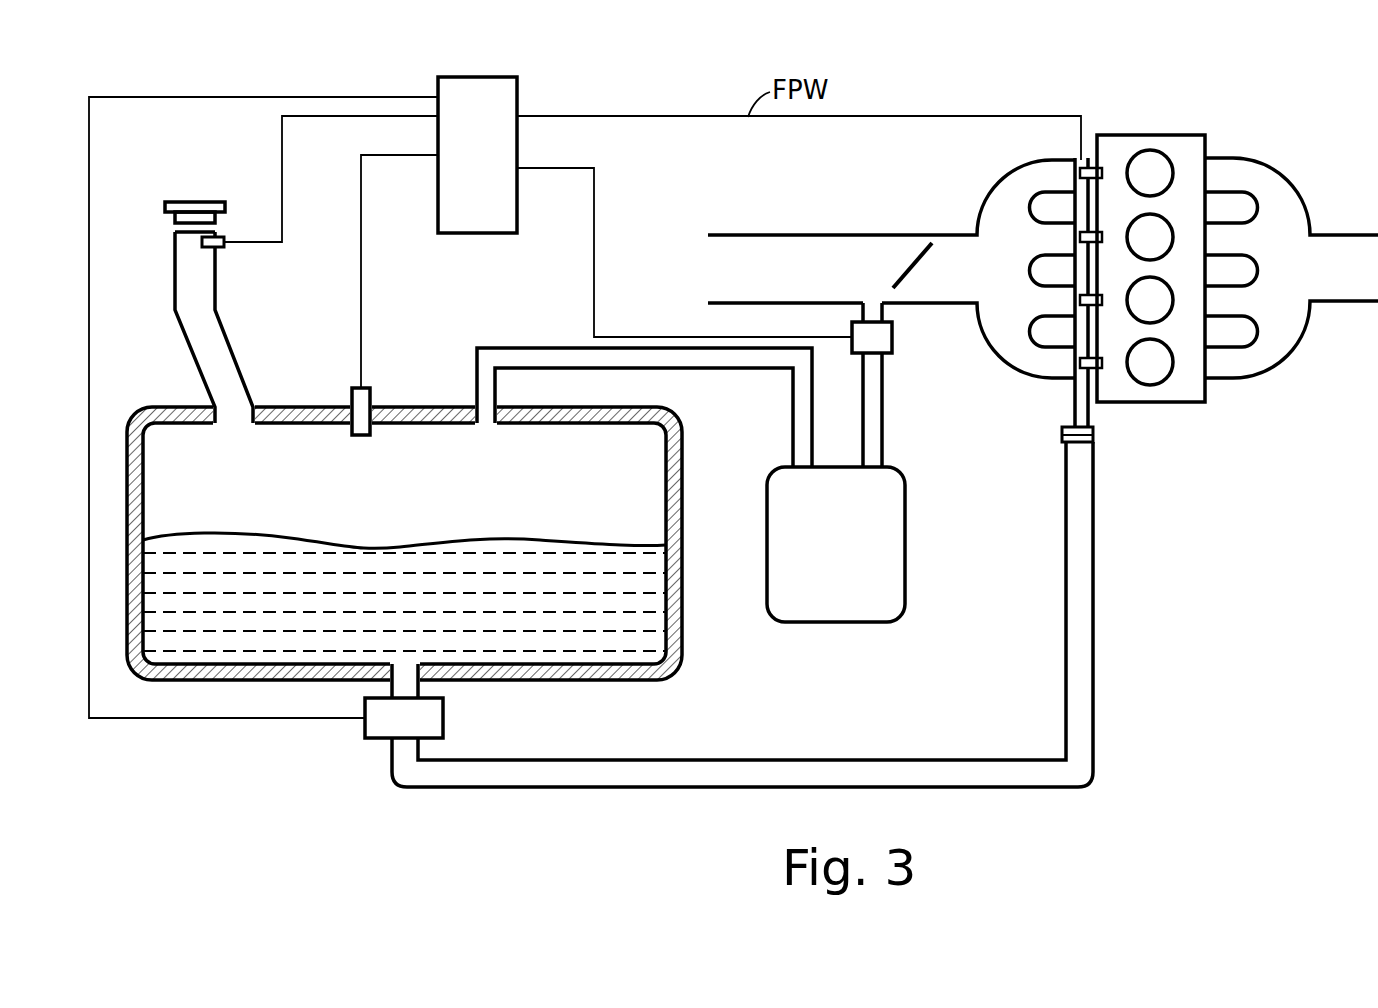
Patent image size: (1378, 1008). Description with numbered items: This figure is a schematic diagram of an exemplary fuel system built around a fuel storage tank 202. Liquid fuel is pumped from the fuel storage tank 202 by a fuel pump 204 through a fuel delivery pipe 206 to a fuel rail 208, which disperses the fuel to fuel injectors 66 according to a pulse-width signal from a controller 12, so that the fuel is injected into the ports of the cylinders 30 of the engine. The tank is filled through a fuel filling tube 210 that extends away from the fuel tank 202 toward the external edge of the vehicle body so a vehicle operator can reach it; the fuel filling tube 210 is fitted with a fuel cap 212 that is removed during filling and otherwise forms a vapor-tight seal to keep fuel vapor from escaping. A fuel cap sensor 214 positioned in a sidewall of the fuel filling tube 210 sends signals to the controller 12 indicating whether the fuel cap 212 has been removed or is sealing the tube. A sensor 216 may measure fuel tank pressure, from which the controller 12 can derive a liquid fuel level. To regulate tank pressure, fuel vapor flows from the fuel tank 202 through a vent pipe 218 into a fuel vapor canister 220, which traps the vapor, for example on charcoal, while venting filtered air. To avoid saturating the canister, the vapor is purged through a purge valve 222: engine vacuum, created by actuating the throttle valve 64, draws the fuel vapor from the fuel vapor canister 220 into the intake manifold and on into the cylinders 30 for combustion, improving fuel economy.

The controller 12 is at (476, 77).
The cylinder 30 is at (1151, 268).
The throttle valve 64 is at (909, 272).
The fuel injectors 66 is at (1084, 158).
The fuel storage tank 202 is at (682, 478).
The fuel pump 204 is at (443, 720).
The fuel delivery pipe 206 is at (743, 757).
The fuel rail 208 is at (1072, 393).
The fuel filling tube 210 is at (182, 337).
The fuel cap 212 is at (185, 202).
The fuel cap sensor 214 is at (225, 246).
The sensor 216 is at (372, 400).
The vent pipe 218 is at (555, 348).
The fuel vapor canister 220 is at (905, 545).
The purge valve 222 is at (892, 340).